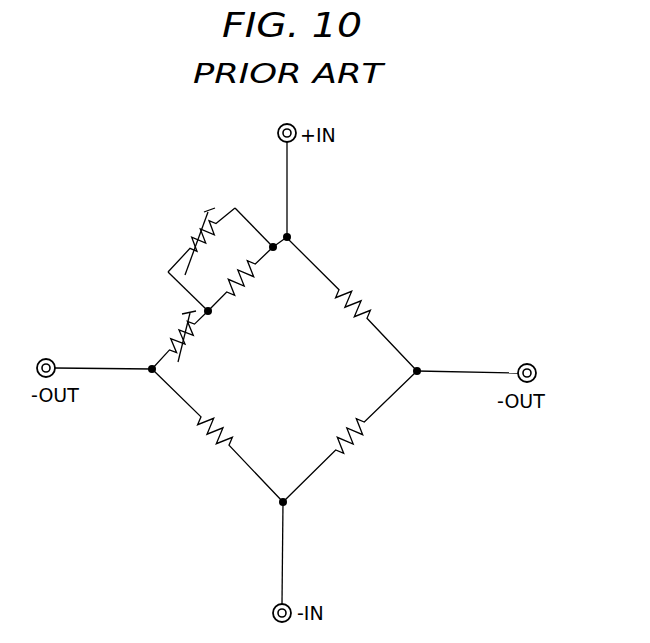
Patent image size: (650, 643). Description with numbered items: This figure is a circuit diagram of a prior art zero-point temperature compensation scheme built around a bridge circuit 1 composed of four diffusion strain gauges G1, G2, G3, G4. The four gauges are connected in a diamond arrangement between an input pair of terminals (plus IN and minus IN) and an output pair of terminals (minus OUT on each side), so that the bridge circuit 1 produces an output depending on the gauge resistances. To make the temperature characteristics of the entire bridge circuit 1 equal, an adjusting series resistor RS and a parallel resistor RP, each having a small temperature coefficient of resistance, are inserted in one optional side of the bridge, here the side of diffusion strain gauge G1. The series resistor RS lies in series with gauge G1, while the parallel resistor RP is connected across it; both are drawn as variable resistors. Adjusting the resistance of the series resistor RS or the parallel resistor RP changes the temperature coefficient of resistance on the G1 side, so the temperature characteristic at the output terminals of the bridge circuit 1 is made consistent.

The bridge circuit 1 is at (336, 490).
The diffusion strain gauge G1 is at (238, 288).
The diffusion strain gauge G2 is at (203, 432).
The diffusion strain gauge G3 is at (355, 297).
The diffusion strain gauge G4 is at (357, 435).
The parallel resistor RP is at (192, 235).
The series resistor RS is at (173, 343).